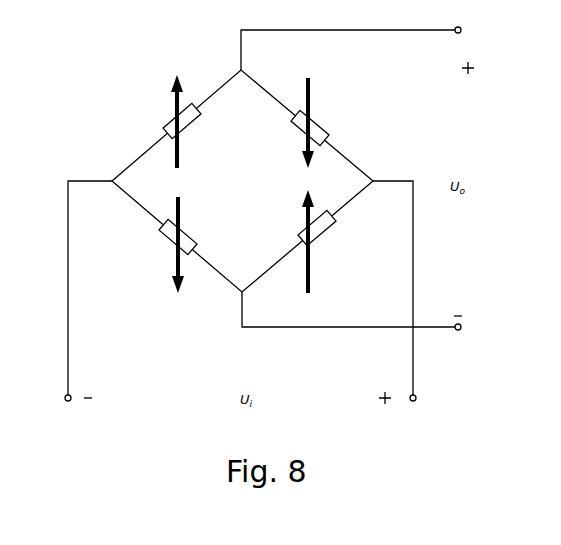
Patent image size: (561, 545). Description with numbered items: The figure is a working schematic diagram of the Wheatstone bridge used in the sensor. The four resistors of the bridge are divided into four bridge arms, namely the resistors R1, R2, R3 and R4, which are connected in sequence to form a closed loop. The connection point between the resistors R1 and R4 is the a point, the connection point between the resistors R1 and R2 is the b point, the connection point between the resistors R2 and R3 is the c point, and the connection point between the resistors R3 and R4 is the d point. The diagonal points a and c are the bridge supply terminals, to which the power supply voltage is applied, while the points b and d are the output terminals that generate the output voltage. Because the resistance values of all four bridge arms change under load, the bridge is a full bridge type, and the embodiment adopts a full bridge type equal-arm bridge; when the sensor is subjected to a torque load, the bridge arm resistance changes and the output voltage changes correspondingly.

The first bridge arm resistor R1 is at (174, 121).
The second bridge arm resistor R2 is at (314, 123).
The third bridge arm resistor R3 is at (321, 241).
The fourth bridge arm resistor R4 is at (172, 245).
The a point a is at (101, 174).
The b point b is at (230, 64).
The c point c is at (381, 172).
The d point d is at (228, 305).